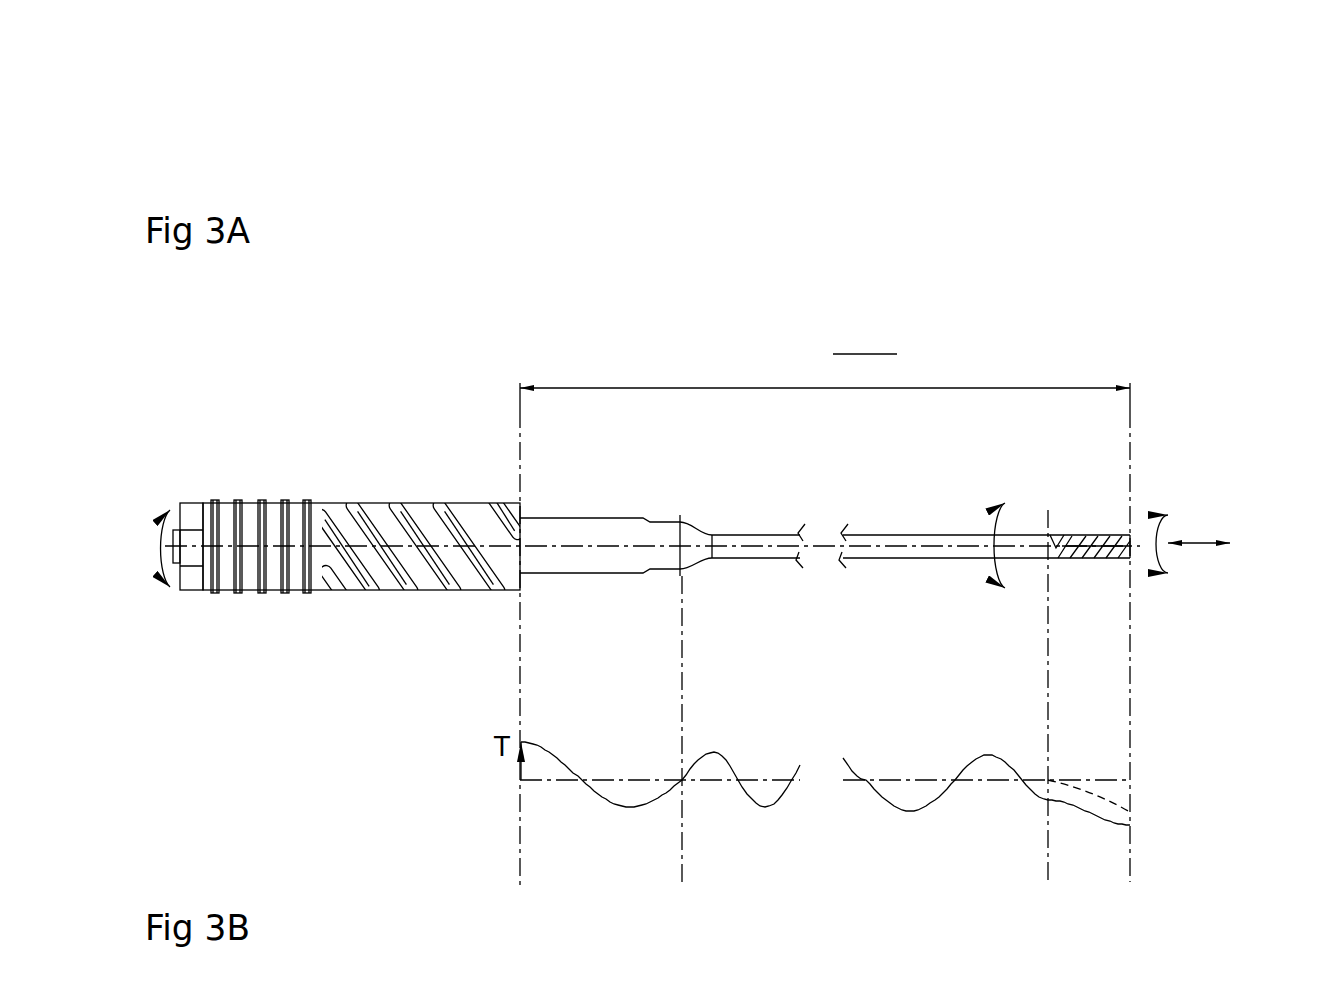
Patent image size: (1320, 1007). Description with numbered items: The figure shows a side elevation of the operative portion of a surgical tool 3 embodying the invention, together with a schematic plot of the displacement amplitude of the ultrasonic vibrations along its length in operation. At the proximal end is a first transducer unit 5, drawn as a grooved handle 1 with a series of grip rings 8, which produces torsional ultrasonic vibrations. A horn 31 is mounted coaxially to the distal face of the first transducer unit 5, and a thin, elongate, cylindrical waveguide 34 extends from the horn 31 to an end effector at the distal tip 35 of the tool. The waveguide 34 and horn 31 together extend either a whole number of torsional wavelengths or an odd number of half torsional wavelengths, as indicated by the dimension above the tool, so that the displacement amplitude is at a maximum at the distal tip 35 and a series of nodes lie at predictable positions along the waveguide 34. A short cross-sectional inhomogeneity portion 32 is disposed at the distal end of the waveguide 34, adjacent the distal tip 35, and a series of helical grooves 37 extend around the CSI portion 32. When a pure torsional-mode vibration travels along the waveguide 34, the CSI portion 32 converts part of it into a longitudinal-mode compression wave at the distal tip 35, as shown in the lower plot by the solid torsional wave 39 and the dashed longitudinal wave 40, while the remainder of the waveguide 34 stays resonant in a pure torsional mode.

In FIG. 3A, the handle body with helical grooves 1 is at (432, 460).
In FIG. 3A, the surgical instrument 3 is at (997, 295).
In FIG. 3A, the first transducer unit 5 is at (320, 663).
In FIG. 3A, the grip rings 8 is at (257, 475).
In FIG. 3A, the horn 31 is at (657, 456).
In FIG. 3A, the CSI portion 32 is at (1086, 502).
In FIG. 3A, the waveguide 34 is at (965, 474).
In FIG. 3A, the distal tip 35 is at (1135, 523).
In FIG. 3A, the helical grooves 37 is at (1088, 533).
In FIG. 3B, the torsional wave 39 is at (1107, 822).
In FIG. 3B, the longitudinal wave 40 is at (1103, 803).